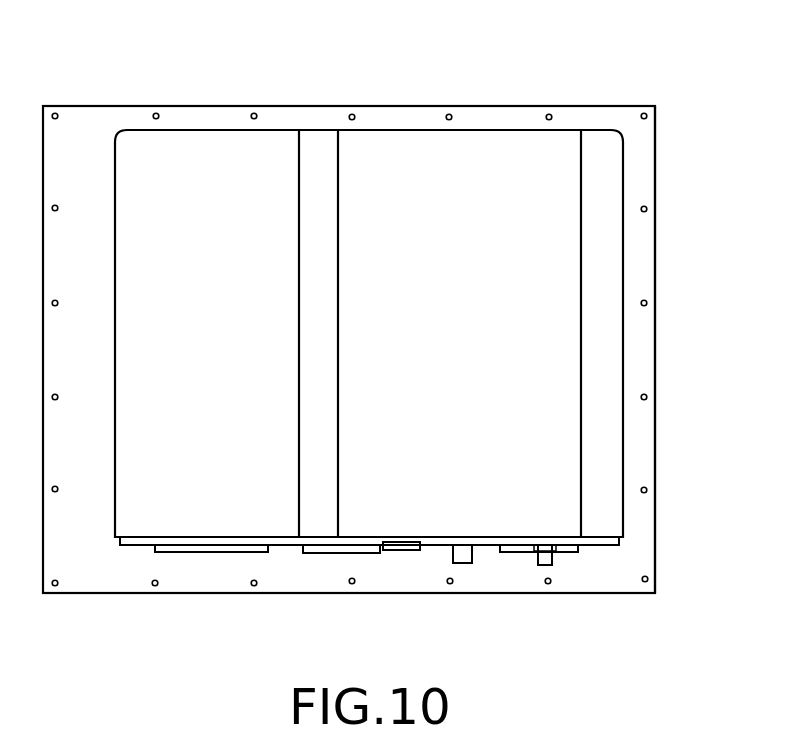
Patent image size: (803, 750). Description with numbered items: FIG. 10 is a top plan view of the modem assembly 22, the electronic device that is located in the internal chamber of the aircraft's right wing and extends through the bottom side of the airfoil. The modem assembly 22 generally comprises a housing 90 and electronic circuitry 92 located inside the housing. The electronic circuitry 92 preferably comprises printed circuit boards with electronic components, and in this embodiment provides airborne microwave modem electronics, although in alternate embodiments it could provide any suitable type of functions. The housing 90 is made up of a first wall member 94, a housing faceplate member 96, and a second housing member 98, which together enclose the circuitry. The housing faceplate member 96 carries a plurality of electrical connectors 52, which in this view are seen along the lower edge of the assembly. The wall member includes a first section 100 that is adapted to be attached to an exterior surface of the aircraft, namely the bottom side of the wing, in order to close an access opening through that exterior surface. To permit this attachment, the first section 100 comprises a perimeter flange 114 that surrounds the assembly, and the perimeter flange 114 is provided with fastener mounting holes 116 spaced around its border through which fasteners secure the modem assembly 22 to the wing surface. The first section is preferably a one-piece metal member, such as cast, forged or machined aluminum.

The modem assembly 22 is at (142, 70).
The housing 90 is at (573, 105).
The electronic circuitry 92 is at (562, 173).
The first wall member 94 is at (656, 463).
The housing faceplate member 96 is at (292, 545).
The second housing member 98 is at (600, 283).
The first section 100 is at (102, 595).
The electrical connectors 52 is at (212, 552).
The perimeter flange 114 is at (435, 595).
The fastener mounting holes 116 is at (548, 583).